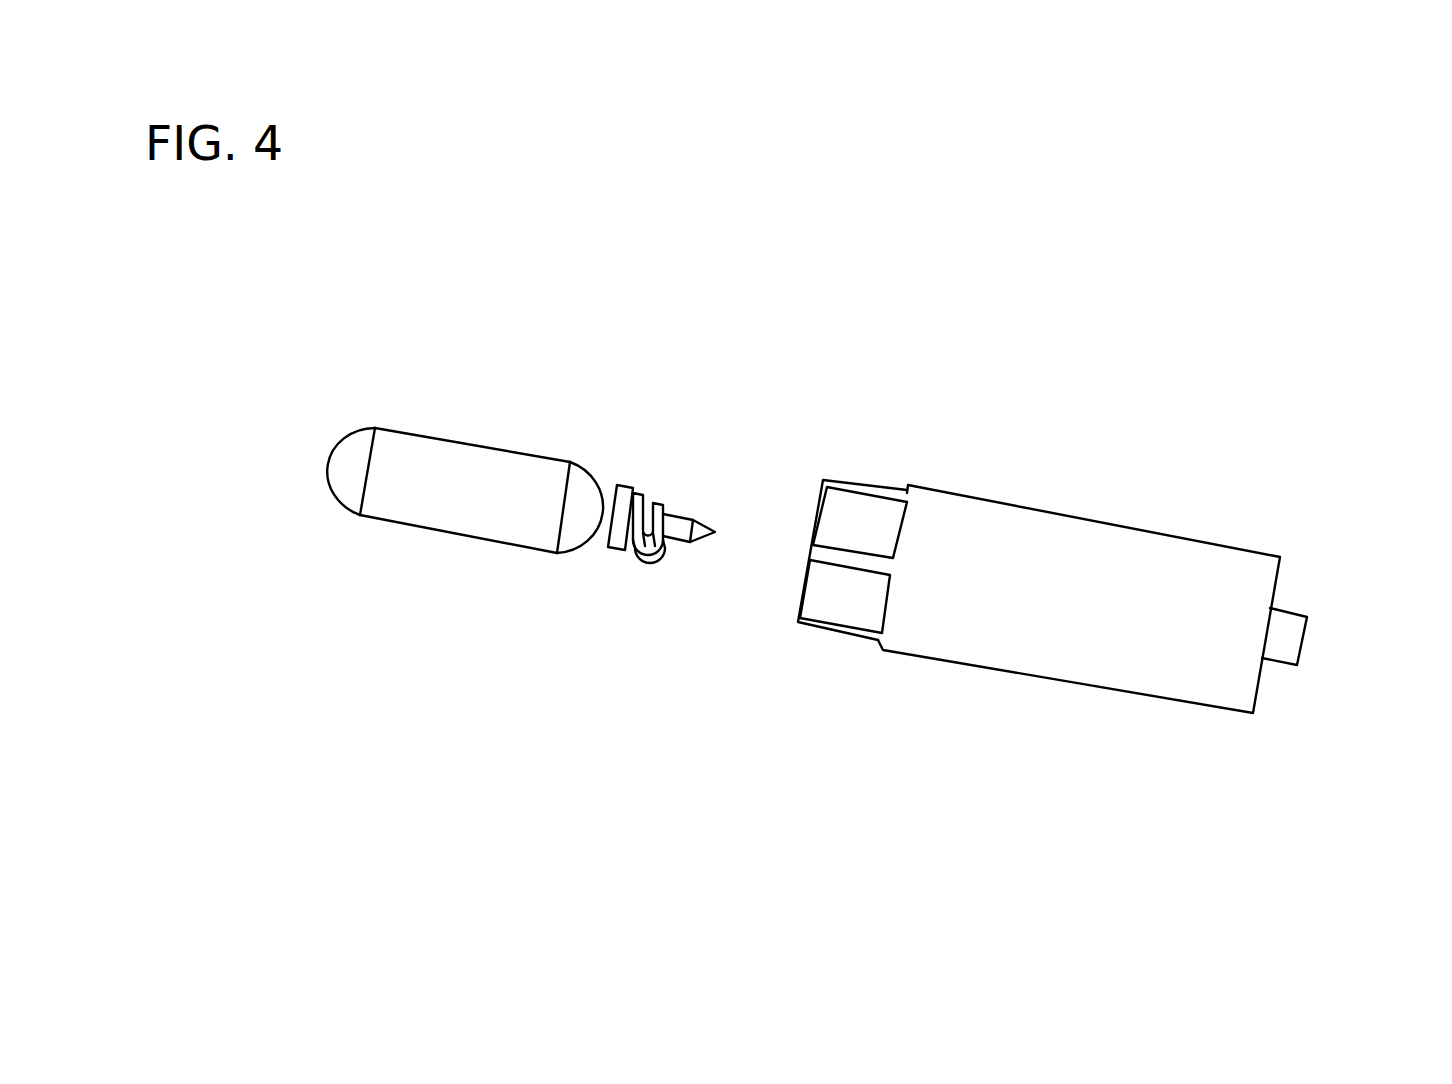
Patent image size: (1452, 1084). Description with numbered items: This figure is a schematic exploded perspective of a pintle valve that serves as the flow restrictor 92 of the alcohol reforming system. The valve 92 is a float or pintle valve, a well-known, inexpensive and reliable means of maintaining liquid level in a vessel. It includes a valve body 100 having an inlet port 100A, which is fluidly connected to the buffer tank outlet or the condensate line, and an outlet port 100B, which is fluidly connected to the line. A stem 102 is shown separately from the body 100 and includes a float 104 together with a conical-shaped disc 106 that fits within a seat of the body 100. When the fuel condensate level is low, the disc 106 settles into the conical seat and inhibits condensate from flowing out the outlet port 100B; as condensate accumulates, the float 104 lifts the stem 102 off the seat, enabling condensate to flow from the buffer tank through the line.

The flow restrictor 92 is at (953, 357).
The valve body 100 is at (1025, 655).
The inlet port 100A is at (813, 593).
The outlet port 100B is at (1295, 612).
The stem 102 is at (523, 445).
The float 104 is at (422, 520).
The conical-shaped disc 106 is at (685, 527).